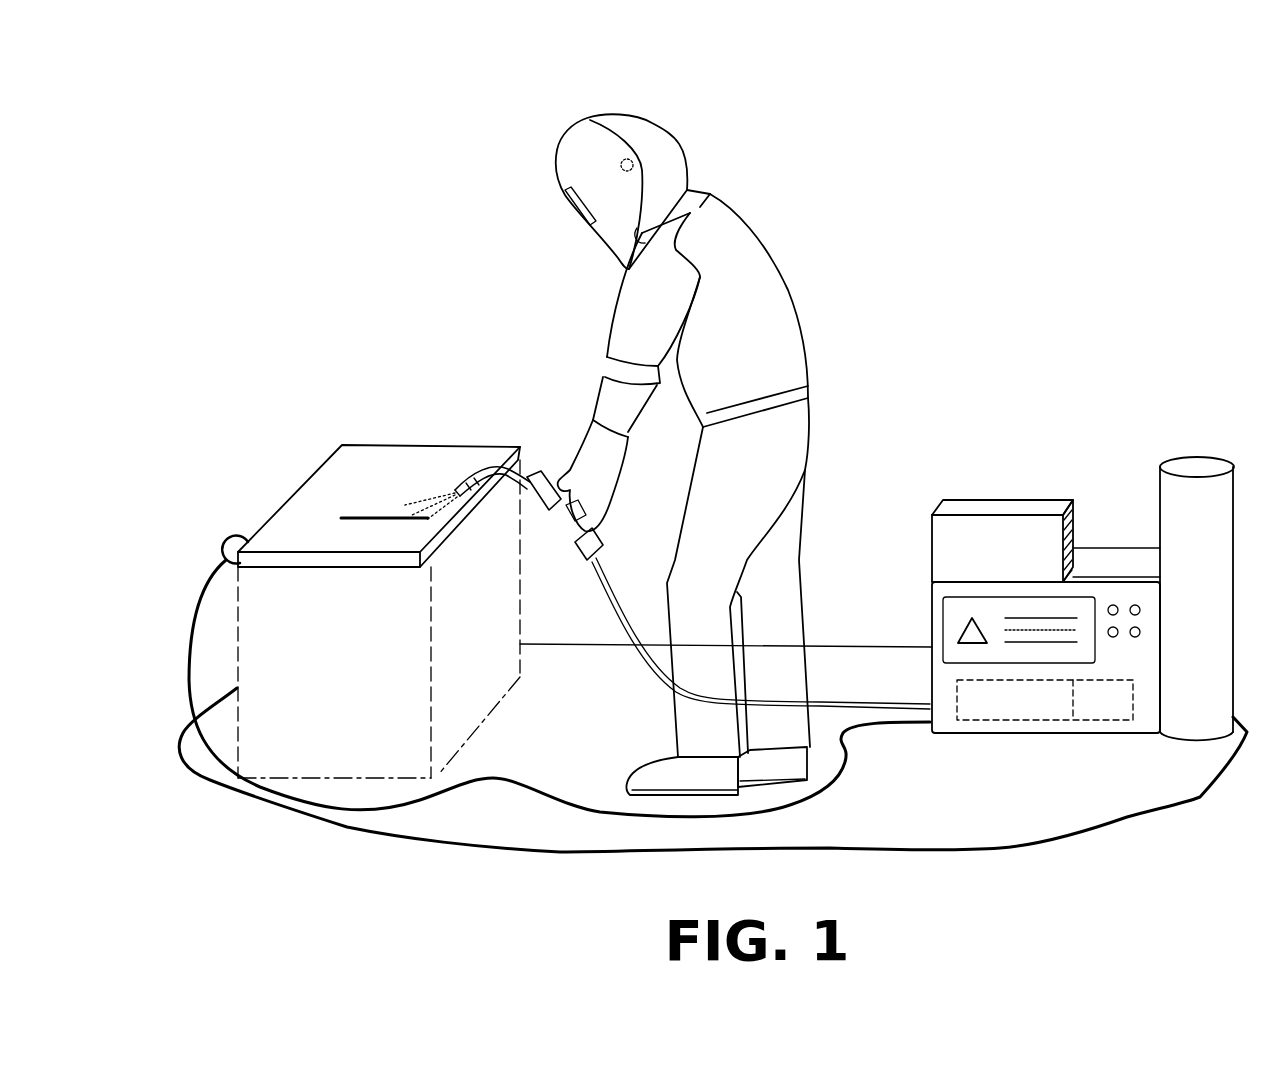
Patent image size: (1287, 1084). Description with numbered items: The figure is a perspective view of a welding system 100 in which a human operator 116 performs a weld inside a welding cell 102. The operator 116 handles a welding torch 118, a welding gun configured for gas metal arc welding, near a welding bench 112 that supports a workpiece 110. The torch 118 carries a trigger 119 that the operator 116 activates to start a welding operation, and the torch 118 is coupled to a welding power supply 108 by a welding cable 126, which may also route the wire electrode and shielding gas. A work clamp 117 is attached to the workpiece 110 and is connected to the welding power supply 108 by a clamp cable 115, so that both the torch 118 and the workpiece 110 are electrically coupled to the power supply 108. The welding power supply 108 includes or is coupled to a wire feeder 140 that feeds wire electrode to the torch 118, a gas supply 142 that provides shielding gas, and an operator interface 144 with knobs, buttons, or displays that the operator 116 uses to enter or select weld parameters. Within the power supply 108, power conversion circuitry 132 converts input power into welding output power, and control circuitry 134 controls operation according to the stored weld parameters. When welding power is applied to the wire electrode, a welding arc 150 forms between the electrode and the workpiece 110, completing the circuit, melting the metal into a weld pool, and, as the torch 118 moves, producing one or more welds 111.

The welding system 100 is at (226, 91).
The welding cell 102 is at (1066, 816).
The welding power supply 108 is at (1073, 601).
The workpiece 110 is at (295, 500).
The weld 111 is at (407, 508).
The welding bench 112 is at (324, 665).
The clamp cable 115 is at (533, 788).
The operator 116 is at (738, 195).
The work clamp 117 is at (226, 543).
The welding torch 118 is at (552, 480).
The trigger 119 is at (537, 510).
The welding cable 126 is at (853, 700).
The power conversion circuitry 132 is at (1016, 723).
The control circuitry 134 is at (1100, 722).
The wire feeder 140 is at (978, 560).
The gas supply 142 is at (1178, 617).
The operator interface 144 is at (1106, 590).
The welding arc 150 is at (442, 470).